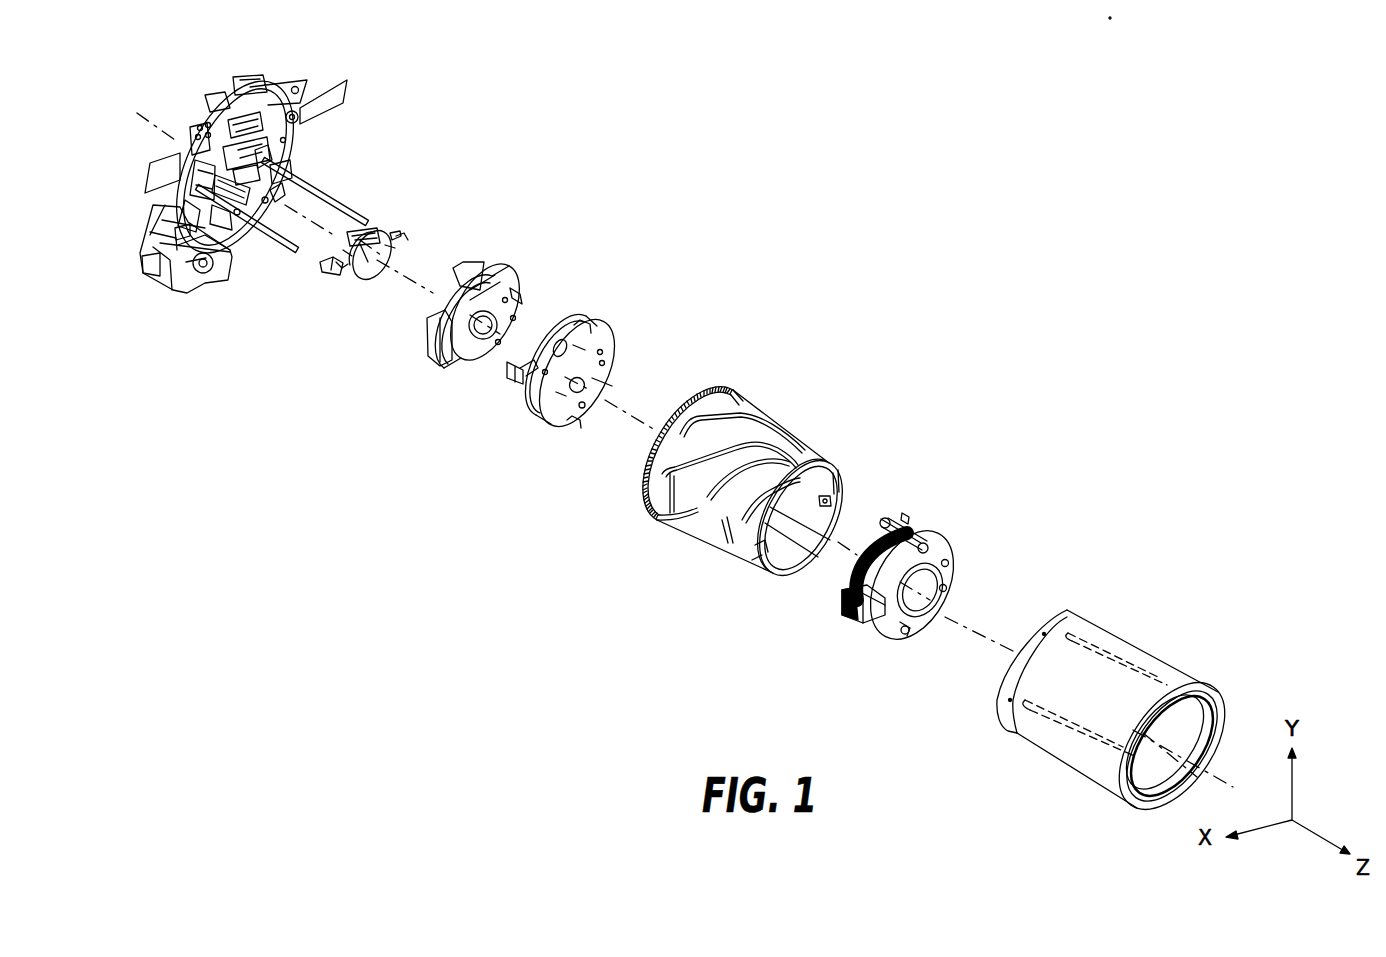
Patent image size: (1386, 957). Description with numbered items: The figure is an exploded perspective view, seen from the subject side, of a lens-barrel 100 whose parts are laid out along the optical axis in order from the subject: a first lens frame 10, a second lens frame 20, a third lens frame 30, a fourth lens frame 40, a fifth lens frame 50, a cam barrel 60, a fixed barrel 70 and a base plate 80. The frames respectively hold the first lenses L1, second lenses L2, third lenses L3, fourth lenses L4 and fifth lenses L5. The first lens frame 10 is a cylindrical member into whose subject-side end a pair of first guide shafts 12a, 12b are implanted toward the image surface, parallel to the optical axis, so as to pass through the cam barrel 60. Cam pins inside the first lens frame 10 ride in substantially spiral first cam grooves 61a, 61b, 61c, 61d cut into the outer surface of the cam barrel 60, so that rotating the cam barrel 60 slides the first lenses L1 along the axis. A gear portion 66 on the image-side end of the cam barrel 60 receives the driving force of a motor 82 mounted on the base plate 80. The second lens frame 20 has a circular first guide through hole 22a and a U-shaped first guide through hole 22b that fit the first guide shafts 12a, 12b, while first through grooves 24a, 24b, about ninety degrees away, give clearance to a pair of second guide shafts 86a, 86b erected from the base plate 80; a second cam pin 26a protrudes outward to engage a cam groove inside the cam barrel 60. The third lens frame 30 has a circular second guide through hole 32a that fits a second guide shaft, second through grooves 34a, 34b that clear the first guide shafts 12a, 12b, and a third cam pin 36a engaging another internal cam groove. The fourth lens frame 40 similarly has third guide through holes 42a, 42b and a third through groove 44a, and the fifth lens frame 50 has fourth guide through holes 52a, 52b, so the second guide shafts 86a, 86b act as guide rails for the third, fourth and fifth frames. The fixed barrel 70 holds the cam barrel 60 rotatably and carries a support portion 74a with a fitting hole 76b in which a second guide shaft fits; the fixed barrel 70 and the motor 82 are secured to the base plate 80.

The lens-barrel 100 is at (745, 241).
The first lens frame 10 is at (1103, 640).
The first guide shaft 12a is at (1150, 680).
The first guide shaft 12b is at (1077, 740).
The first lenses L1 is at (1180, 714).
The second lens frame 20 is at (940, 556).
The first guide through hole 22a is at (930, 540).
The first guide through hole 22b is at (910, 635).
The first through groove 24a is at (950, 571).
The first through groove 24b is at (852, 582).
The second cam pin 26a is at (903, 513).
The second lenses L2 is at (918, 603).
The cam barrel 60 is at (797, 447).
The first cam groove 61a is at (740, 417).
The first cam groove 61b is at (667, 517).
The first cam groove 61c is at (720, 535).
The first cam groove 61d is at (747, 537).
The gear portion 66 is at (697, 383).
The fixed barrel 70 is at (787, 580).
The support portion 74a is at (824, 500).
The fitting hole 76b is at (830, 500).
The third lens frame 30 is at (613, 350).
The third lenses L3 is at (587, 382).
The second guide through hole 32a is at (520, 387).
The second through groove 34a is at (573, 322).
The second through groove 34b is at (573, 428).
The third cam pin 36a is at (513, 363).
The fourth lens frame 40 is at (500, 282).
The third guide through hole 42a is at (520, 312).
The third guide through hole 42b is at (430, 325).
The third through groove 44a is at (482, 270).
The fourth lenses L4 is at (522, 300).
The fifth lens frame 50 is at (377, 228).
The fourth guide through hole 52a is at (340, 268).
The fourth guide through hole 52b is at (402, 235).
The fifth lenses L5 is at (370, 263).
The base plate 80 is at (283, 148).
The motor 82 is at (192, 252).
The second guide shaft 86a is at (330, 197).
The second guide shaft 86b is at (280, 235).